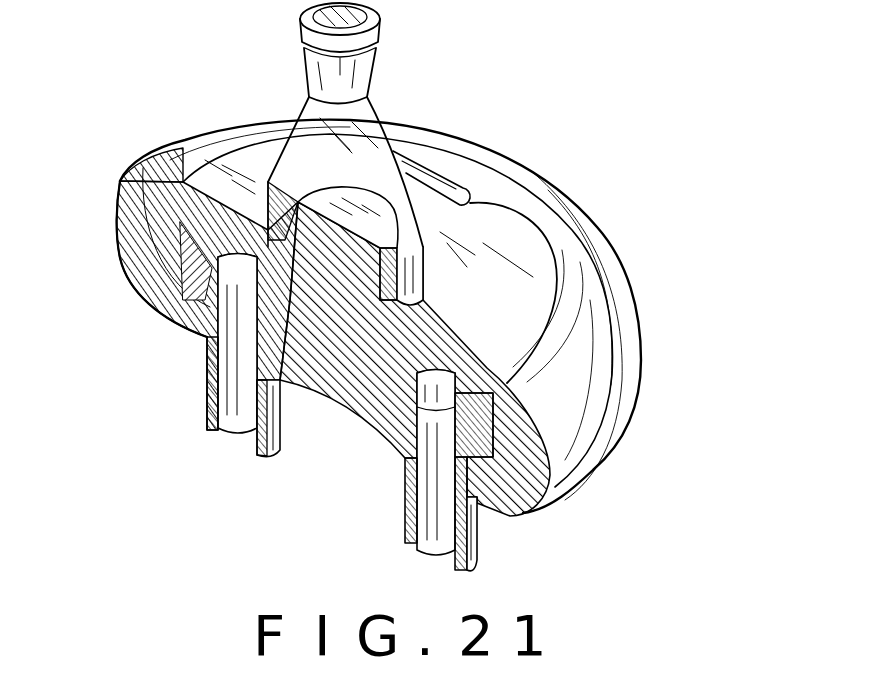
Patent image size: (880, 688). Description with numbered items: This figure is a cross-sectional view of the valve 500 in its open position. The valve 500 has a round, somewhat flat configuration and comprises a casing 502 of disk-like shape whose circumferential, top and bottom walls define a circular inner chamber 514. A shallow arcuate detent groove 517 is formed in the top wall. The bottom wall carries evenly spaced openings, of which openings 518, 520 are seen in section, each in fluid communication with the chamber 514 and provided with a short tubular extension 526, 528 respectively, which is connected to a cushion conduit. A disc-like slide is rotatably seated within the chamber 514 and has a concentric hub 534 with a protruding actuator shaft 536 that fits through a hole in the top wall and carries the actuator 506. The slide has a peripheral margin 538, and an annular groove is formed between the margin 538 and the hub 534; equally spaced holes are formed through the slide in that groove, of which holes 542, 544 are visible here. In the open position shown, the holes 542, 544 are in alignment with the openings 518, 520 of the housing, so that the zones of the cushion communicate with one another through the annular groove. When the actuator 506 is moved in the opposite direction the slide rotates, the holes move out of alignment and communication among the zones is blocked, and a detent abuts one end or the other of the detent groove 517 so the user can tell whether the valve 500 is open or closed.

The valve 500 is at (583, 165).
The casing 502 is at (640, 310).
The actuator 506 is at (370, 140).
The inner chamber 514 is at (188, 183).
The detent groove 517 is at (437, 193).
The opening 518 is at (207, 387).
The opening 520 is at (460, 405).
The tubular extension 526 is at (280, 427).
The tubular extension 528 is at (477, 560).
The hub 534 is at (403, 397).
The actuator shaft 536 is at (267, 187).
The peripheral margin 538 is at (187, 261).
The hole 542 is at (197, 327).
The hole 544 is at (452, 368).